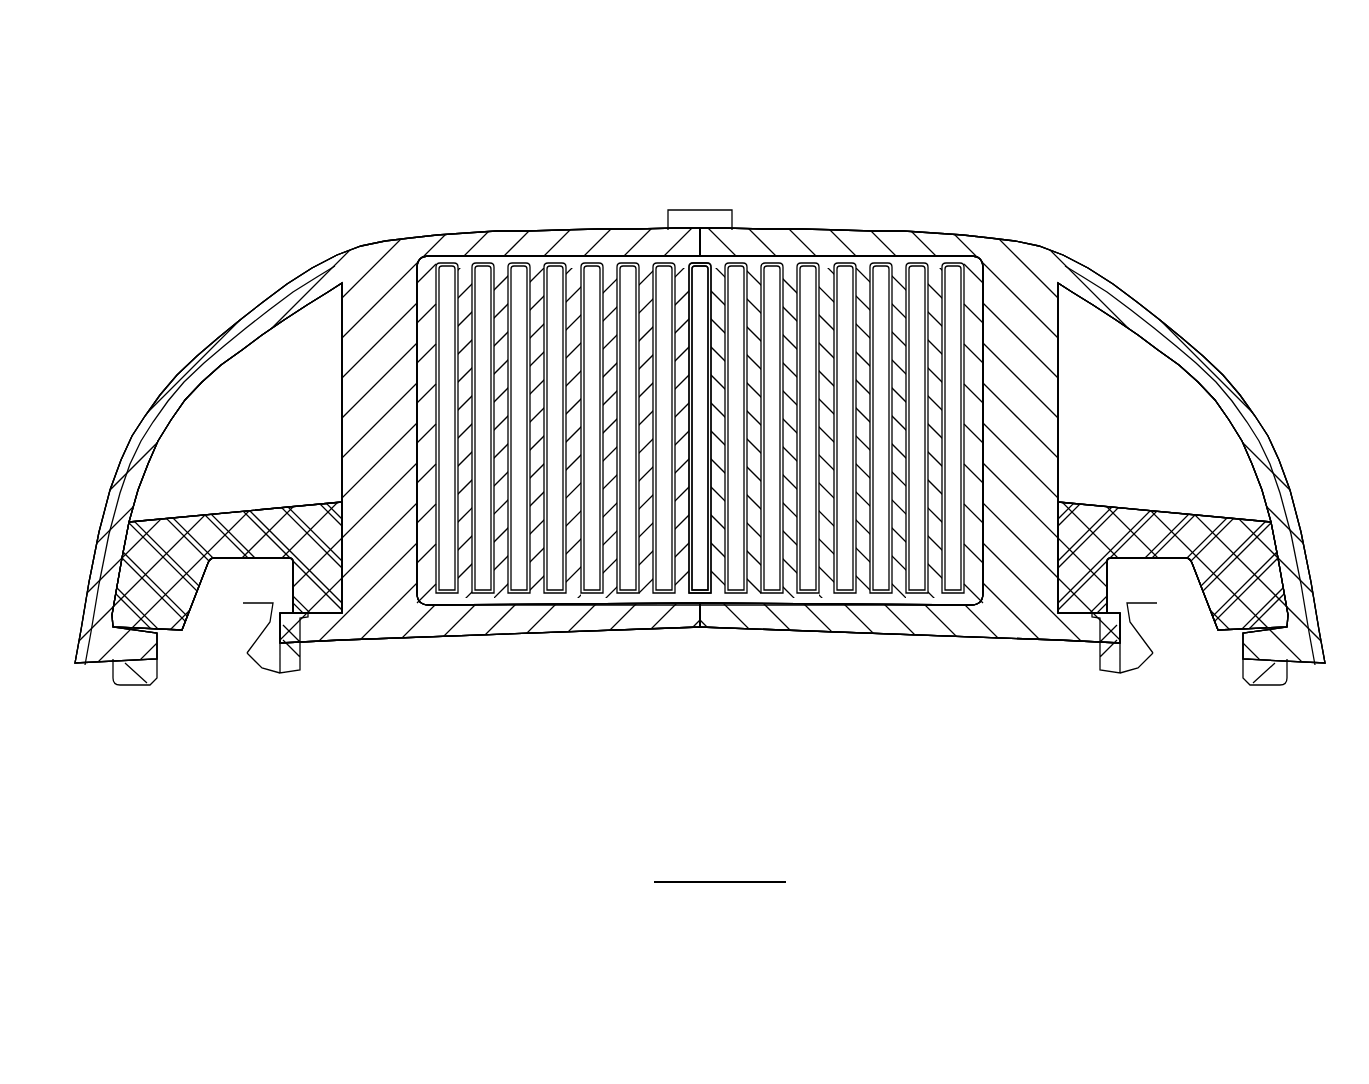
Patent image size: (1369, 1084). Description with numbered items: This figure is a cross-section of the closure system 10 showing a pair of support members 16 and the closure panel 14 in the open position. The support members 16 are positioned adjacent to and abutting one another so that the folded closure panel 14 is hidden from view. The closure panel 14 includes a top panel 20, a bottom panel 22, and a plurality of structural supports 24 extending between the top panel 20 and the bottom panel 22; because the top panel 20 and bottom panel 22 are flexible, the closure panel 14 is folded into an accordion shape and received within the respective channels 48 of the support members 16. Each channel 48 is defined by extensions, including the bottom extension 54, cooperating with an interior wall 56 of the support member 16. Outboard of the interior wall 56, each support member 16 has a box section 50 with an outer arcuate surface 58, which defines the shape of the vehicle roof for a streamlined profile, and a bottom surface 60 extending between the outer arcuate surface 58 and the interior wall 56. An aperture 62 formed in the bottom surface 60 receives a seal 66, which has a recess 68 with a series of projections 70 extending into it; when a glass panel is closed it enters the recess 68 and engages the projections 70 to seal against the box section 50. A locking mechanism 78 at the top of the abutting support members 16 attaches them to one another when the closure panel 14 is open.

The closure system 10 is at (283, 157).
The closure panel 14 is at (626, 611).
The support members 16 is at (226, 300).
The top panel 20 is at (458, 325).
The bottom panel 22 is at (460, 515).
The structural supports 24 is at (627, 283).
The channel 48 is at (425, 290).
The box section 50 is at (233, 372).
The bottom extension 54 is at (547, 632).
The interior wall 56 is at (353, 365).
The outer arcuate surface 58 is at (545, 240).
The bottom surface 60 is at (312, 645).
The aperture 62 is at (264, 666).
The seal 66 is at (145, 572).
The recess 68 is at (245, 570).
The projections 70 is at (256, 606).
The locking mechanism 78 is at (705, 208).